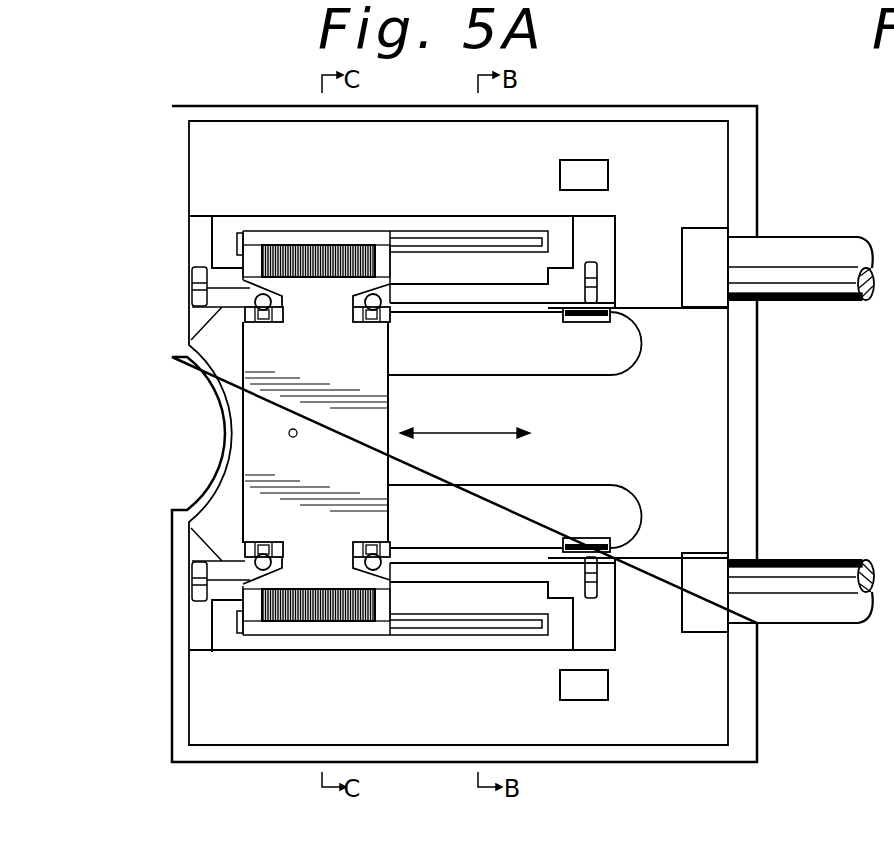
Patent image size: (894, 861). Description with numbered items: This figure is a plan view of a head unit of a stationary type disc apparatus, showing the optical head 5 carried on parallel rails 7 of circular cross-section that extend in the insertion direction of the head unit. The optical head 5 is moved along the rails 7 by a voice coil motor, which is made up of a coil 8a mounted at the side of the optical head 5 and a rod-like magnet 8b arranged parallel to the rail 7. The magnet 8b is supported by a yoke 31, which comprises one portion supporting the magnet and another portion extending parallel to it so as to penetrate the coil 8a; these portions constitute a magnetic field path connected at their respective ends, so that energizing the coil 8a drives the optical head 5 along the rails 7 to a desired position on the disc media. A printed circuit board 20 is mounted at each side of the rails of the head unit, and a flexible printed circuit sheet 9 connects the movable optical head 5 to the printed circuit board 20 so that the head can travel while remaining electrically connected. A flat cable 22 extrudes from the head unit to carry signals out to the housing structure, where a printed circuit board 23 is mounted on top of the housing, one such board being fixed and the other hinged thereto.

The printed circuit board 20 is at (208, 173).
The magnet 8b is at (257, 240).
The coil 8a is at (270, 262).
The yoke 31 is at (218, 260).
The optical head 5 is at (270, 457).
The printed circuit board 23 is at (608, 177).
The flat cable 22 is at (840, 282).
The rail 7 is at (577, 297).
The flexible printed circuit sheet 9 is at (623, 483).